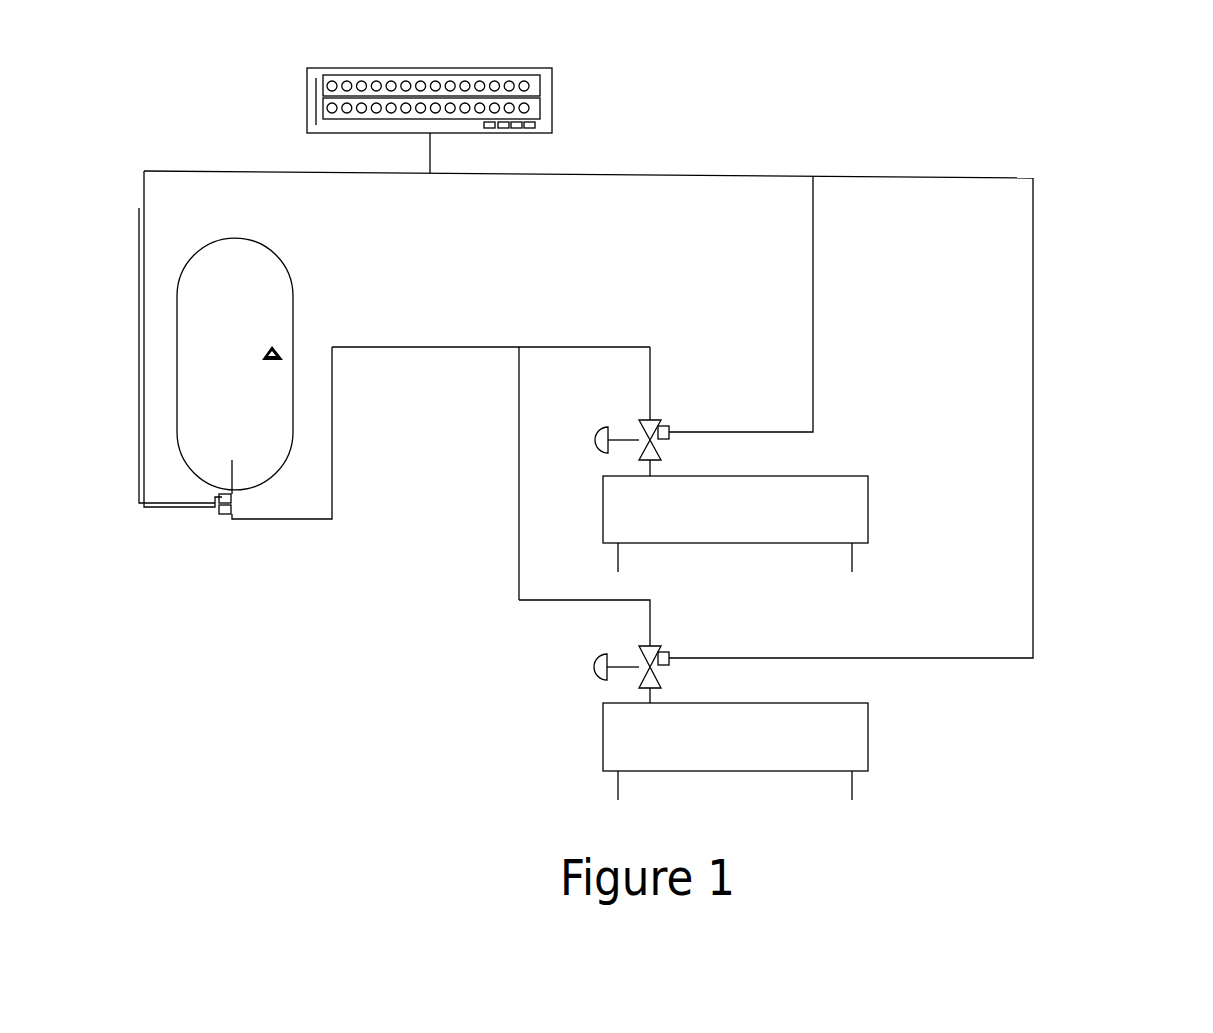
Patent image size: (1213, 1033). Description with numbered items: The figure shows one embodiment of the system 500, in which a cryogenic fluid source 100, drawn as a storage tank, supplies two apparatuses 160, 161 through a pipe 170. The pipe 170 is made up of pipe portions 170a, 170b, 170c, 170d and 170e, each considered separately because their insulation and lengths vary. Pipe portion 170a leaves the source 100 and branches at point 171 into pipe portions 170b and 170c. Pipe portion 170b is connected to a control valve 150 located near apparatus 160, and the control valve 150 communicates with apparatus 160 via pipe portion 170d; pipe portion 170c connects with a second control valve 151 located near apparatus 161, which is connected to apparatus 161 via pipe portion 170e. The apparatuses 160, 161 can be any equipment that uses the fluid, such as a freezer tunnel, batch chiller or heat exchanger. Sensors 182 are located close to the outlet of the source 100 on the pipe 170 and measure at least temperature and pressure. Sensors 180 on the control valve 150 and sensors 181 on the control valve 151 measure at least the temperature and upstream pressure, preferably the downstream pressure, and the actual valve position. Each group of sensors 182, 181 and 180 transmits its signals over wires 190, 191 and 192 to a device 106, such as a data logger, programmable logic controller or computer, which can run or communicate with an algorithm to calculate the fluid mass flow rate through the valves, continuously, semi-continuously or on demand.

The system 500 is at (1047, 122).
The device 106 is at (553, 103).
The wire 192 is at (232, 171).
The cryogenic fluid source 100 is at (283, 248).
The sensors 182 is at (223, 515).
The pipe 170 is at (372, 347).
The pipe portion 170a is at (333, 443).
The pipe portion 170b is at (612, 348).
The pipe portion 170c is at (519, 488).
The pipe portion 170d is at (652, 470).
The pipe portion 170e is at (652, 697).
The point 171 is at (519, 347).
The sensors 180 is at (665, 425).
The sensors 181 is at (668, 652).
The control valve 150 is at (593, 440).
The second control valve 151 is at (592, 667).
The apparatus 160 is at (815, 476).
The apparatus 161 is at (870, 748).
The wire 190 is at (1033, 420).
The wire 191 is at (813, 276).